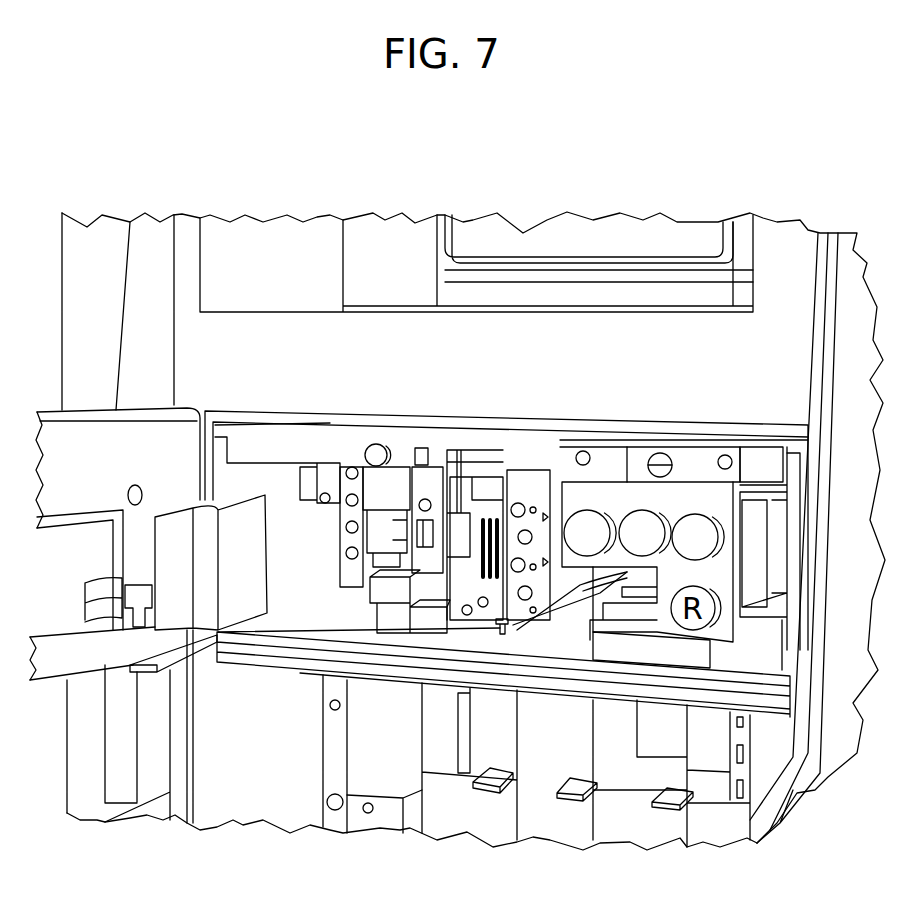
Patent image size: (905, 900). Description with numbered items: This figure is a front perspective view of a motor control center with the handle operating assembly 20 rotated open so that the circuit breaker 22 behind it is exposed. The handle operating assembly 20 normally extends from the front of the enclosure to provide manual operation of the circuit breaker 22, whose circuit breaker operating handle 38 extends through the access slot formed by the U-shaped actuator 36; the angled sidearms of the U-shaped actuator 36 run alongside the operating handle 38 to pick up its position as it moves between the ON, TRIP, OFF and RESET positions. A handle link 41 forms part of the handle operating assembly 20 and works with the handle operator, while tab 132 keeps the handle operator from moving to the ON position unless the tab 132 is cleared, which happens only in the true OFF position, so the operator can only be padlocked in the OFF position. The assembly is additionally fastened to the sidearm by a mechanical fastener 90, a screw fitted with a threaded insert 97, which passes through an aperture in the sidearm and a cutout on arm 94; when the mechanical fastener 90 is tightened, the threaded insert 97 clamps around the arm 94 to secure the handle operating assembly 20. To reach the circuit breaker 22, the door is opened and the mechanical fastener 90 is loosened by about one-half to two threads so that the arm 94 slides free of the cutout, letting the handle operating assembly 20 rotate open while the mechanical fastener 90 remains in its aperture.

The tab 132 is at (127, 437).
The handle operating assembly 20 is at (257, 497).
The circuit breaker 22 is at (383, 497).
The U-shaped actuator 36 is at (433, 477).
The circuit breaker operating handle 38 is at (428, 535).
The handle link 41 is at (400, 613).
The mechanical fastener 90 is at (510, 637).
The arm 94 is at (143, 673).
The threaded insert 97 is at (517, 630).